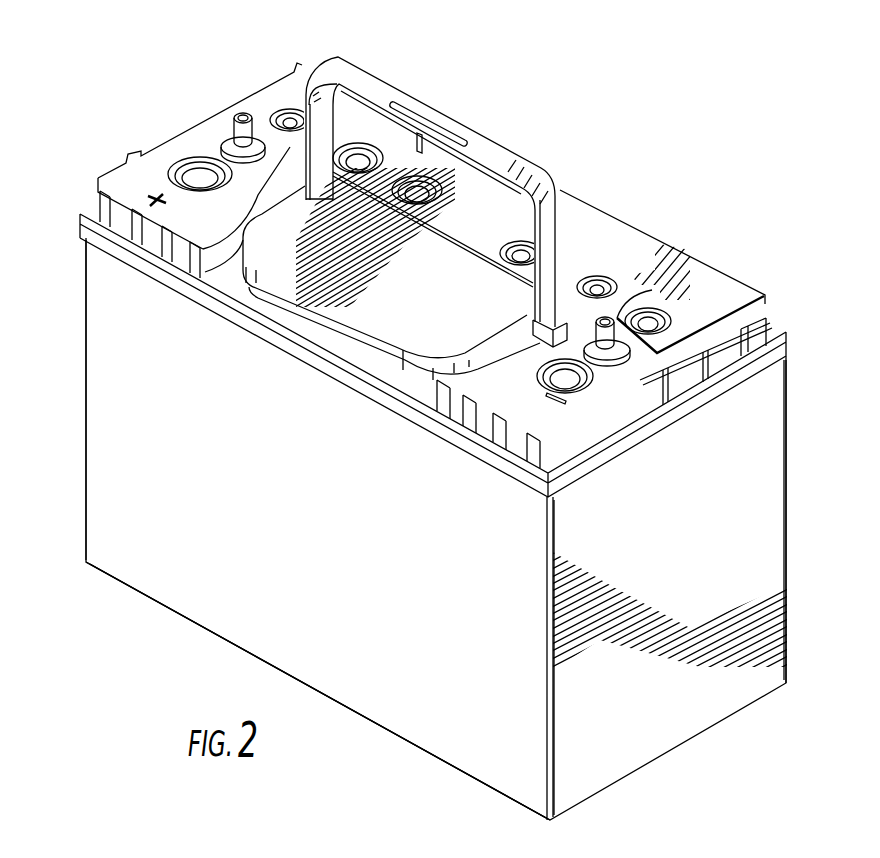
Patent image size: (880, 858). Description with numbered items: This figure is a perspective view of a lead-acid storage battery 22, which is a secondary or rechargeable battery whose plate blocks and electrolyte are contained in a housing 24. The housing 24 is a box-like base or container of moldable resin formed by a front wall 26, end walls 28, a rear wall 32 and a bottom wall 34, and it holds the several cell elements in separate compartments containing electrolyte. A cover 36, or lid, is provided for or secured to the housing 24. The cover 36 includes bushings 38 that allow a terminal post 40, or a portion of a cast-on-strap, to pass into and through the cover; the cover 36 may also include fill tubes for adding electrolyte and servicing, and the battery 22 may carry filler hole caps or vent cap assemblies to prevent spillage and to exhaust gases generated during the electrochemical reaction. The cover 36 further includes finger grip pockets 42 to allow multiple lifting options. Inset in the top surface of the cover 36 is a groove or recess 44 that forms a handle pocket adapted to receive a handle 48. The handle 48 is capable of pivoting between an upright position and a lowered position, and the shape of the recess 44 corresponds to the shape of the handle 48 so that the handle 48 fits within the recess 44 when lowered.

The battery 22 is at (643, 156).
The housing 24 is at (782, 398).
The front wall 26 is at (228, 423).
The end wall 28 is at (86, 320).
The rear wall 32 is at (788, 602).
The bottom wall 34 is at (197, 628).
The cover 36 is at (625, 238).
The bushing 38 is at (228, 140).
The terminal post 40 is at (243, 113).
The finger grip pocket 42 is at (642, 406).
The recess 44 is at (268, 300).
The handle 48 is at (373, 90).